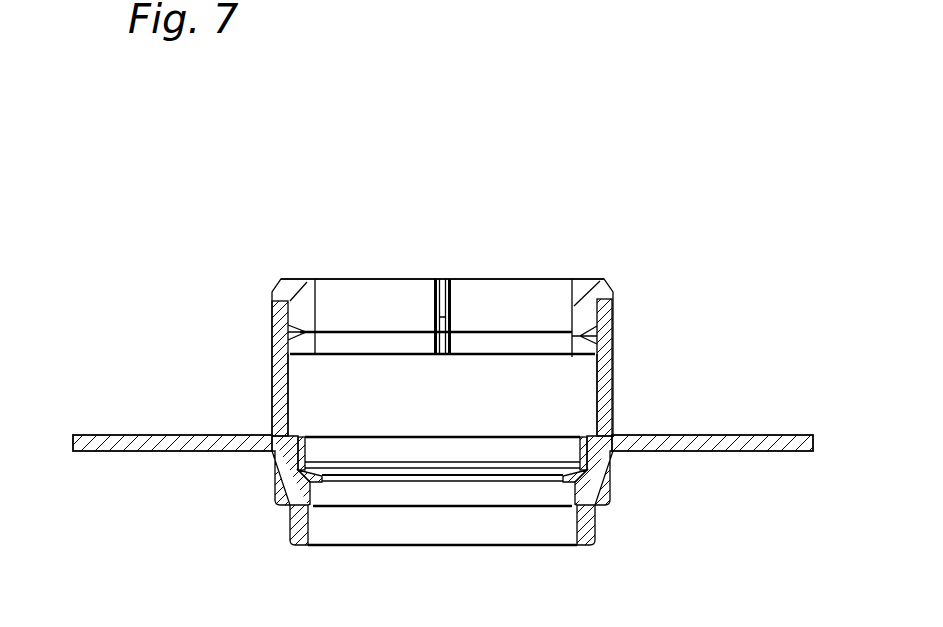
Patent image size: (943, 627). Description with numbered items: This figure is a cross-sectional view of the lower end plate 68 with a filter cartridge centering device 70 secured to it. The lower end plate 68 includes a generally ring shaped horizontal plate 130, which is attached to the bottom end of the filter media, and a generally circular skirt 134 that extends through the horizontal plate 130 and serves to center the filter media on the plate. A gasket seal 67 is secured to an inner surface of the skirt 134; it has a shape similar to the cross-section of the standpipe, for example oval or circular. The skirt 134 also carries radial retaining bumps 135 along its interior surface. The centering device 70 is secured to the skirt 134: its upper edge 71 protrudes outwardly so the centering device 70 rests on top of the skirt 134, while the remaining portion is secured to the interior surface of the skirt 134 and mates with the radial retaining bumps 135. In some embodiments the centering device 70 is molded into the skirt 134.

The centering device 70 is at (560, 250).
The upper edge 71 is at (302, 279).
The radial retaining bumps 135 is at (300, 332).
The skirt 134 is at (272, 410).
The lower end plate 68 is at (700, 395).
The horizontal plate 130 is at (763, 436).
The gasket seal 67 is at (318, 472).